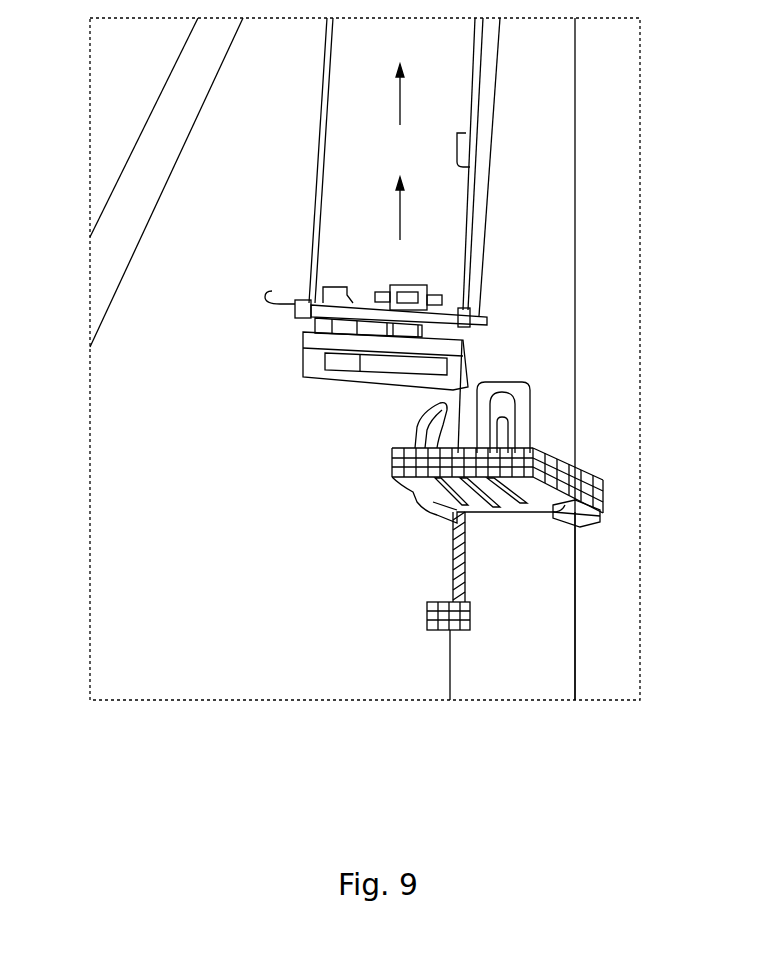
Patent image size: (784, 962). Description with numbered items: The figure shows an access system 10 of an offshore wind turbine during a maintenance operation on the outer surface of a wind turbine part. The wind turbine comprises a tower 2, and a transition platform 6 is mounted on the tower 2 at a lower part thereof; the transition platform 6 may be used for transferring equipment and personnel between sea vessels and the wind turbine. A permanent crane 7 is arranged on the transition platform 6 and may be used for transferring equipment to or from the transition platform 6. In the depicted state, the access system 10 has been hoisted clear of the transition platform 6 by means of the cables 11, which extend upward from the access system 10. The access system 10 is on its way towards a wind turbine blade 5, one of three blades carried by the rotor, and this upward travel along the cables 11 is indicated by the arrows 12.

The tower 2 is at (552, 176).
The wind turbine blade 5 is at (173, 126).
The transition platform 6 is at (575, 502).
The permanent crane 7 is at (425, 432).
The access system 10 is at (335, 348).
The cables 11 is at (310, 258).
The arrows 12 is at (400, 102).